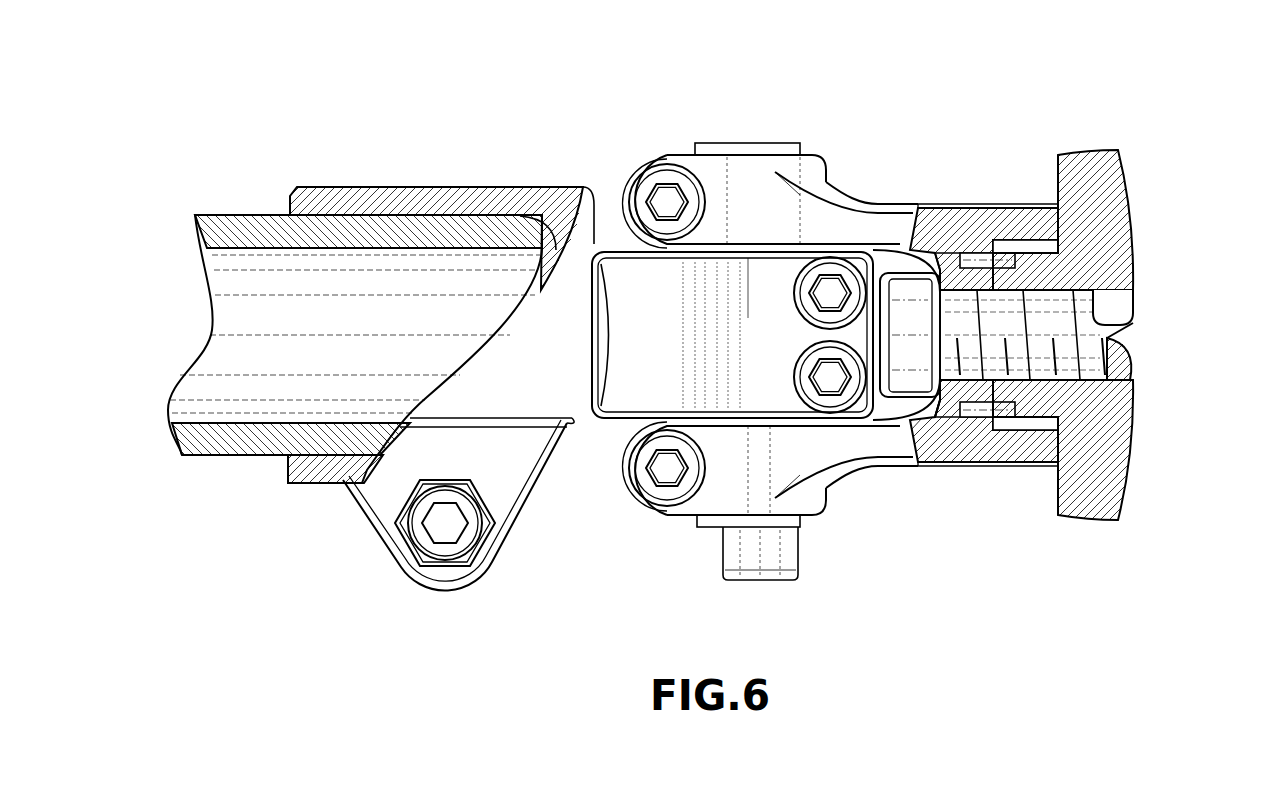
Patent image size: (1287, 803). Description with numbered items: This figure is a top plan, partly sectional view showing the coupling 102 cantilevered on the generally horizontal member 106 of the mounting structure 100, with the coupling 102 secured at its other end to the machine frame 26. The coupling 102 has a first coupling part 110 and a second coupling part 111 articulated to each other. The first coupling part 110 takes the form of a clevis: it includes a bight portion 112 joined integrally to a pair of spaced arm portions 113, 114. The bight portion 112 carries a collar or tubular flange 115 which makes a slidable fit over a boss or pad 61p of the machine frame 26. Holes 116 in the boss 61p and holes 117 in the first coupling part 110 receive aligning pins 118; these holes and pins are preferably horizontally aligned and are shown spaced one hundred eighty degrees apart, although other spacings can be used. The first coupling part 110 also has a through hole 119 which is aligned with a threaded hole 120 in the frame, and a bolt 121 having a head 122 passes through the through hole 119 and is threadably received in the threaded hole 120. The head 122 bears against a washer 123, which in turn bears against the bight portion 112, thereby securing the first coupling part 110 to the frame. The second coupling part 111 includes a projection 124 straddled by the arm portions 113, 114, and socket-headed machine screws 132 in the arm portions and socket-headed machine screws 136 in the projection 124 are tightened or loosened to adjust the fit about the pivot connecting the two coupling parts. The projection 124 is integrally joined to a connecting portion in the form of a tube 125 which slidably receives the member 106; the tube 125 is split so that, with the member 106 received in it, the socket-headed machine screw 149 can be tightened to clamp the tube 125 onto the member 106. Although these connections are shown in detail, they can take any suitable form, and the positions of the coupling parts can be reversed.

The mounting structure 100 is at (222, 212).
The horizontal member 106 is at (232, 445).
The tube 125 is at (440, 203).
The projection 124 is at (592, 400).
The socket-headed machine screw 149 is at (440, 525).
The arm portion 114 is at (592, 200).
The socket-headed machine screw 132 is at (667, 198).
The arm portion 113 is at (810, 190).
The second coupling part 111 is at (653, 277).
The socket-headed machine screw 136 is at (830, 292).
The coupling 102 is at (873, 190).
The first coupling part 110 is at (908, 190).
The through hole 119 is at (925, 330).
The bight portion 112 is at (925, 362).
The head 122 is at (905, 387).
The tubular flange 115 is at (1033, 223).
The hole 117 is at (947, 258).
The aligning pin 118 is at (1003, 257).
The washer 123 is at (940, 400).
The boss 61p is at (1027, 422).
The machine frame 26 is at (1127, 187).
The hole 116 is at (1130, 270).
The threaded hole 120 is at (1135, 318).
The bolt 121 is at (1131, 355).